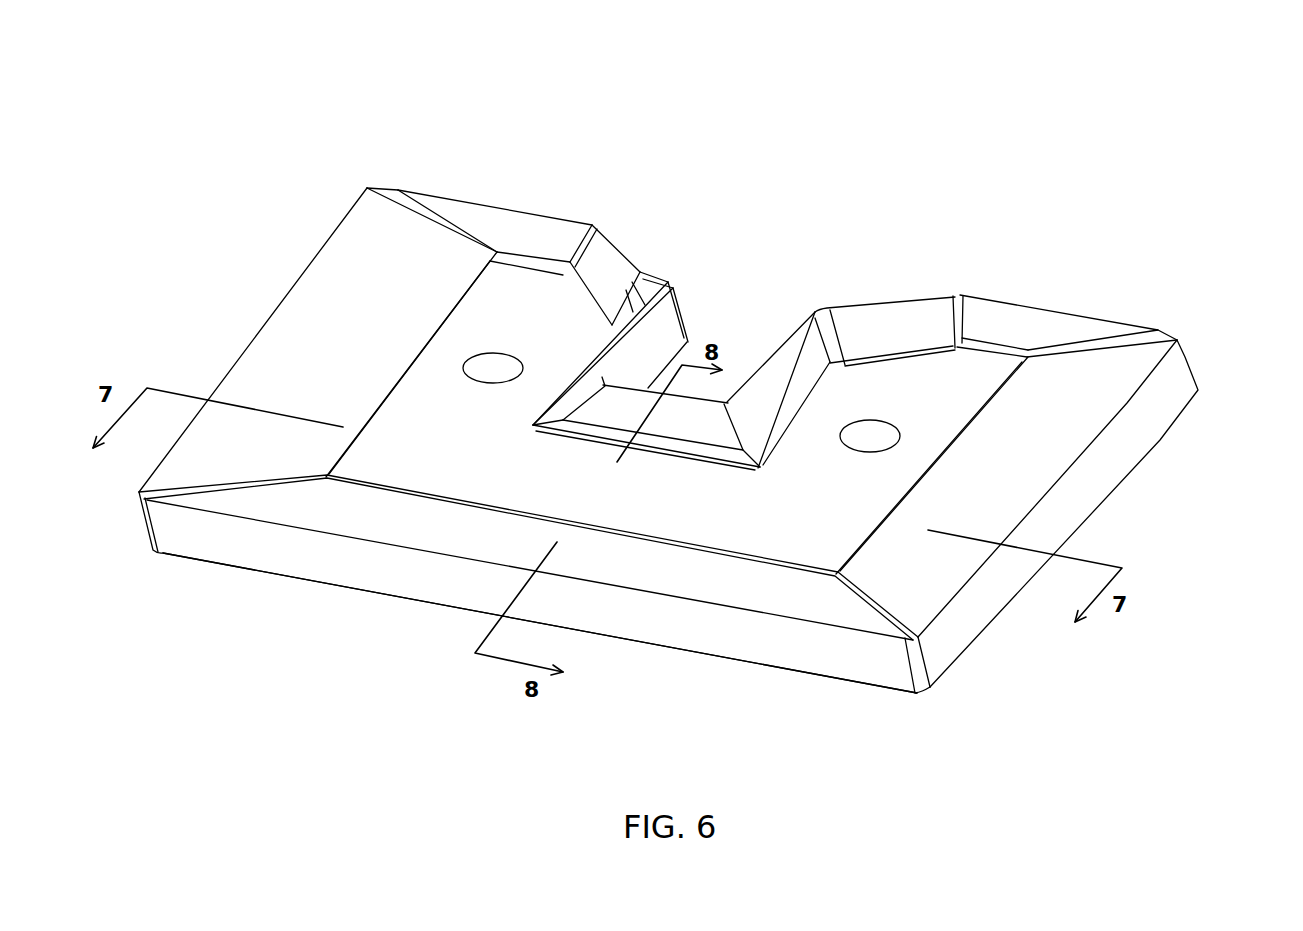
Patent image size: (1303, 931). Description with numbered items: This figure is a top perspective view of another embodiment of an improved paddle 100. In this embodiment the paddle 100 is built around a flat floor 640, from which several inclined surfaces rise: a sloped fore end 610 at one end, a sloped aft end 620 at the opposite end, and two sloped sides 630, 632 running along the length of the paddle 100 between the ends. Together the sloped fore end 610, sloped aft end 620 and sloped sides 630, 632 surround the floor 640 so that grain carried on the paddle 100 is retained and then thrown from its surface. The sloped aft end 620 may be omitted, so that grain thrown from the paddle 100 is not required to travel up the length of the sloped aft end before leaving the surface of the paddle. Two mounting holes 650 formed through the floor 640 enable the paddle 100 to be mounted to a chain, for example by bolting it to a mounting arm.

The improved paddle 100 is at (1060, 140).
The sloped fore end 610 is at (527, 225).
The sloped aft end 620 is at (337, 557).
The sloped side 630 is at (310, 347).
The sloped side 632 is at (1085, 432).
The floor 640 is at (506, 464).
The mounting holes 650 is at (488, 385).